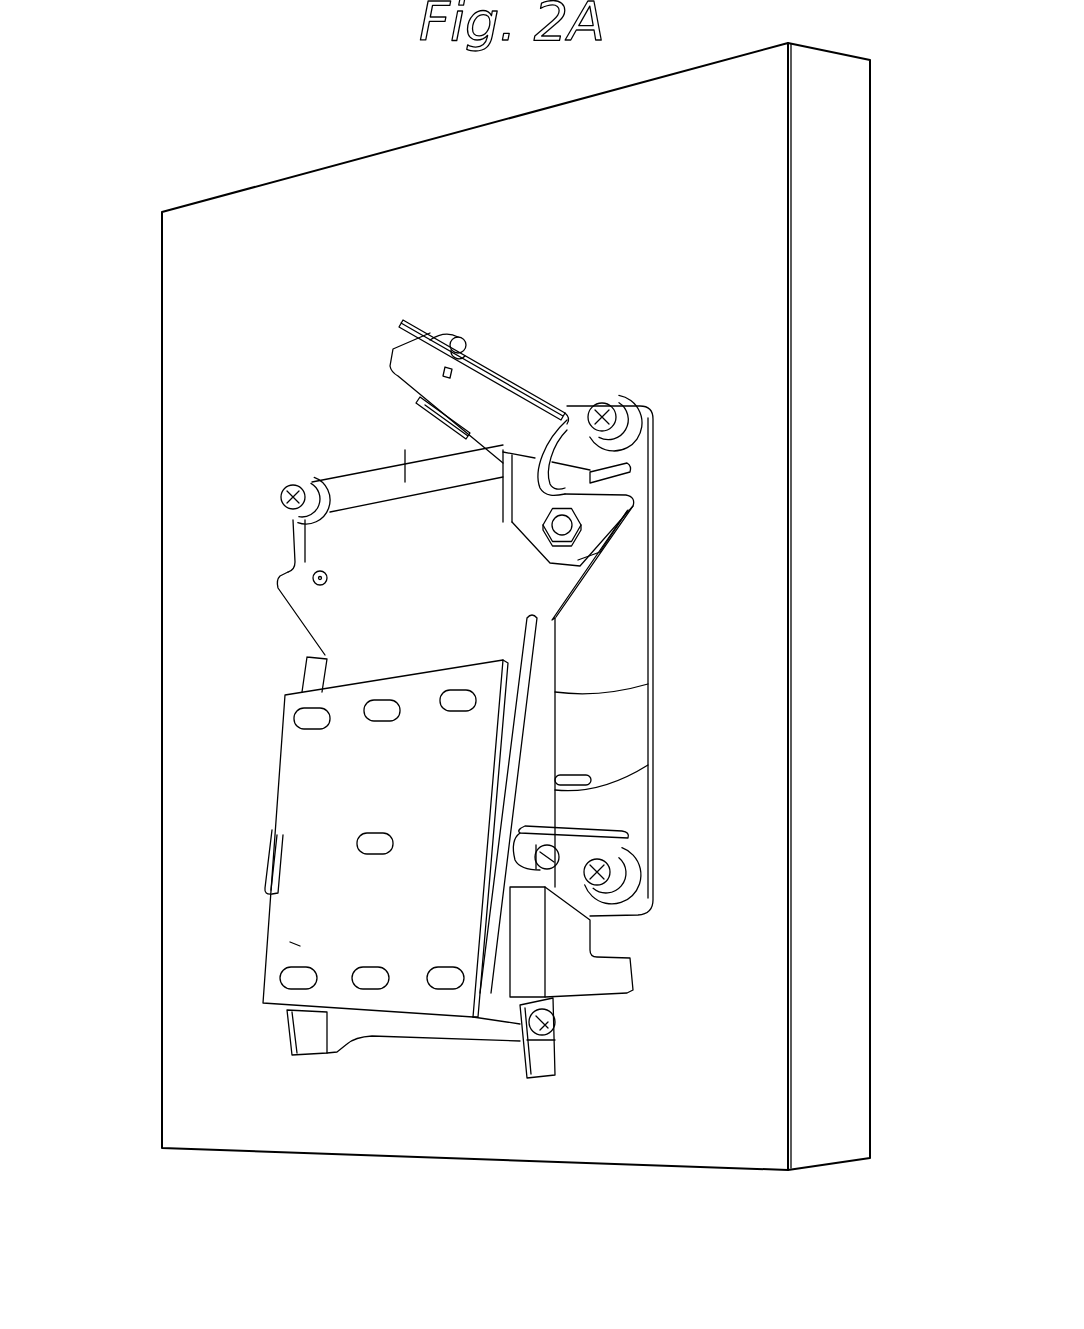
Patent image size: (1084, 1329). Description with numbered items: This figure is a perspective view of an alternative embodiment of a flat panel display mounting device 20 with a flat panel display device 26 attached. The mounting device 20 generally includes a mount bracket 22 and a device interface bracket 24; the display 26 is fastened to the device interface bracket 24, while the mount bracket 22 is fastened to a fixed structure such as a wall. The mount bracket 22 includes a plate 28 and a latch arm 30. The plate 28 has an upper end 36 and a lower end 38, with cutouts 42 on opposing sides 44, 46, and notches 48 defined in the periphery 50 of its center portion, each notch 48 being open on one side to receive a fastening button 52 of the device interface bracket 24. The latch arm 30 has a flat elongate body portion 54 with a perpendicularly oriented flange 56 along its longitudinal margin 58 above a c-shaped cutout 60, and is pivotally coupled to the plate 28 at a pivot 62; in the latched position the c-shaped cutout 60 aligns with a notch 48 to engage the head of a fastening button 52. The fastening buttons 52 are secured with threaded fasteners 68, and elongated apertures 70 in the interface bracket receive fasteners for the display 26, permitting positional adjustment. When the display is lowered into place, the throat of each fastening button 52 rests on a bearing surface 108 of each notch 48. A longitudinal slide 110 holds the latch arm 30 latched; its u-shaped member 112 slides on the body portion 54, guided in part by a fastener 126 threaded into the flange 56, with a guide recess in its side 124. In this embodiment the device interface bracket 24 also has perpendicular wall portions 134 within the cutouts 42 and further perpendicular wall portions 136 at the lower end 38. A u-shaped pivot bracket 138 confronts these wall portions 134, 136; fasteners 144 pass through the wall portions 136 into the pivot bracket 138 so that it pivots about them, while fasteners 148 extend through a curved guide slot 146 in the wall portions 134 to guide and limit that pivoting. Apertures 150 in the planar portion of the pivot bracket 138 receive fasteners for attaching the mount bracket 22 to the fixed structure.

The flat panel display mounting device 20 is at (689, 529).
The mount bracket 22 is at (313, 575).
The device interface bracket 24 is at (640, 667).
The flat panel display device 26 is at (853, 98).
The plate 28 is at (313, 607).
The latch arm 30 is at (515, 383).
The upper end 36 is at (385, 487).
The lower end 38 is at (350, 1040).
The cutouts 42 is at (640, 721).
The side 44 is at (280, 770).
The side 46 is at (650, 683).
The notches 48 is at (293, 560).
The periphery 50 is at (595, 580).
The fastening buttons 52 is at (310, 480).
The flat elongate body portion 54 is at (568, 408).
The perpendicularly oriented flange 56 is at (395, 357).
The longitudinal margin 58 is at (535, 397).
The c-shaped cutout 60 is at (530, 470).
The pivot 62 is at (546, 530).
The threaded fasteners 68 is at (293, 493).
The apertures 70 is at (595, 780).
The bearing surface 108 is at (625, 492).
The longitudinal slide 110 is at (474, 352).
The u-shaped member 112 is at (466, 350).
The side 124 is at (497, 374).
The fastener 126 is at (452, 342).
The perpendicular wall portions 134 is at (550, 650).
The perpendicular wall portions 136 is at (290, 1042).
The u-shaped pivot bracket 138 is at (290, 945).
The fasteners 144 is at (557, 1022).
The curved guide slot 146 is at (622, 832).
The fasteners 148 is at (560, 857).
The apertures 150 is at (440, 698).